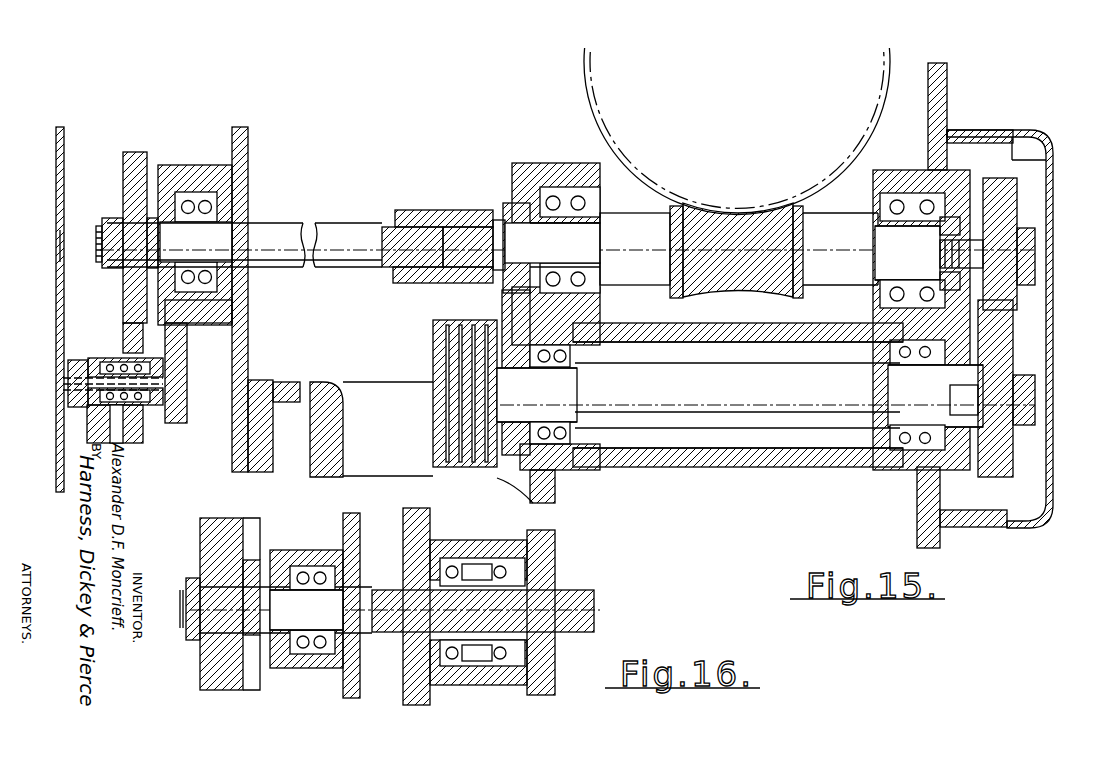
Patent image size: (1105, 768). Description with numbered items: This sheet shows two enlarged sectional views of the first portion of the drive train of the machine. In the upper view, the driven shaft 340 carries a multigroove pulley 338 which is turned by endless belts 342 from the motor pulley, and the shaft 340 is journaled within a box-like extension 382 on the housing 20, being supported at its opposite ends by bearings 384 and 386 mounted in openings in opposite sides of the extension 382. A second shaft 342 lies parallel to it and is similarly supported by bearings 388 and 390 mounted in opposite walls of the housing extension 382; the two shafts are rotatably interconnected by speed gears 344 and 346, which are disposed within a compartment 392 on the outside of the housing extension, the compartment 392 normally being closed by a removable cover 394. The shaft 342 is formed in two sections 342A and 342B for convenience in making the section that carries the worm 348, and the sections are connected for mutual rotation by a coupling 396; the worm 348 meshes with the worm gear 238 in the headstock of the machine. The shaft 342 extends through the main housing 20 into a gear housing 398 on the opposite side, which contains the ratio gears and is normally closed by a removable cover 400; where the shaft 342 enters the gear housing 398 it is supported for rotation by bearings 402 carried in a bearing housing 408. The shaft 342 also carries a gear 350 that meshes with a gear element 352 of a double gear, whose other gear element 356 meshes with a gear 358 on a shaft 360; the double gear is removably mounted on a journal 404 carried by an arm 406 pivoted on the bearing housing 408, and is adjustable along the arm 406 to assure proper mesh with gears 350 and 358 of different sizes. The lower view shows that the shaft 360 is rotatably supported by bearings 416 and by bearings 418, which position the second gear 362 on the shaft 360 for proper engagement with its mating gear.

In FIG. 15, the base 20 is at (250, 137).
In FIG. 16, the base 20 is at (355, 540).
In FIG. 15, the worm gear 238 is at (889, 57).
In FIG. 15, the pulley 338 is at (433, 366).
In FIG. 15, the driven shaft 340 is at (736, 396).
In FIG. 15, the second shaft 342 is at (262, 229).
In FIG. 15, the shaft section 342A is at (421, 226).
In FIG. 15, the shaft section 342B is at (613, 216).
In FIG. 15, the speed gear 344 is at (1000, 432).
In FIG. 15, the speed gear 346 is at (1004, 237).
In FIG. 15, the worm 348 is at (808, 213).
In FIG. 15, the gear 350 is at (126, 163).
In FIG. 15, the gear element 352 is at (140, 430).
In FIG. 15, the gear element 356 is at (100, 398).
In FIG. 16, the gear 358 is at (242, 531).
In FIG. 16, the shaft 360 is at (362, 592).
In FIG. 16, the second gear 362 is at (556, 580).
In FIG. 15, the box-like extension 382 is at (940, 120).
In FIG. 15, the bearing 384 is at (590, 324).
In FIG. 15, the bearing 386 is at (906, 351).
In FIG. 15, the bearing 388 is at (552, 183).
In FIG. 15, the bearing 390 is at (926, 200).
In FIG. 15, the compartment 392 is at (1013, 138).
In FIG. 15, the removable cover 394 is at (1053, 192).
In FIG. 15, the coupling 396 is at (481, 210).
In FIG. 15, the gear housing 398 is at (66, 214).
In FIG. 15, the removable cover 400 is at (62, 238).
In FIG. 15, the bearings 402 is at (228, 187).
In FIG. 15, the journal 404 is at (84, 410).
In FIG. 15, the arm 406 is at (186, 360).
In FIG. 15, the bearing housing 408 is at (206, 193).
In FIG. 16, the bearings 416 is at (312, 566).
In FIG. 16, the bearings 418 is at (486, 558).